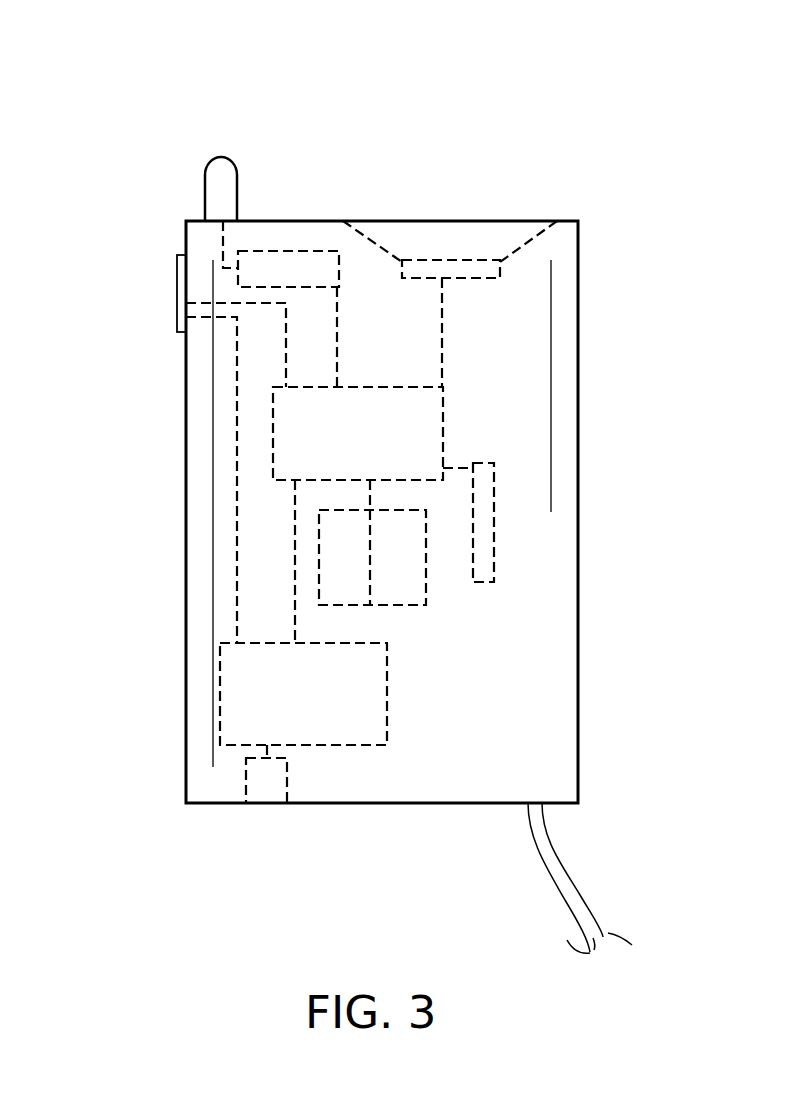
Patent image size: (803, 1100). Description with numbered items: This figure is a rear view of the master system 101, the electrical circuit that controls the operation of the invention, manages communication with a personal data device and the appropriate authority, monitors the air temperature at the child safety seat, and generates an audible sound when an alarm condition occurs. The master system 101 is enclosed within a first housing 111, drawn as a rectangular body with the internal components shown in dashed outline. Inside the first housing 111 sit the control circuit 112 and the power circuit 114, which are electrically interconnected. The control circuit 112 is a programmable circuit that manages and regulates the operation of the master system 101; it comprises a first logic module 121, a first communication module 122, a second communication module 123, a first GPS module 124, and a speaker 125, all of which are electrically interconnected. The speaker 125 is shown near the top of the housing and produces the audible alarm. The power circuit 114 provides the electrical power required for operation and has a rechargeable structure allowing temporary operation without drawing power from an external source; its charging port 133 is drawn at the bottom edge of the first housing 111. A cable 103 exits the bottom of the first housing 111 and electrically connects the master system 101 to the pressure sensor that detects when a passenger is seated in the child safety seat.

The master system 101 is at (112, 100).
The first housing 111 is at (579, 710).
The control circuit 112 is at (490, 510).
The power circuit 114 is at (242, 683).
The first logic module 121 is at (425, 428).
The first communication module 122 is at (410, 595).
The second communication module 123 is at (332, 553).
The first GPS module 124 is at (295, 268).
The speaker 125 is at (447, 237).
The charging port 133 is at (258, 793).
The cable 103 is at (545, 862).